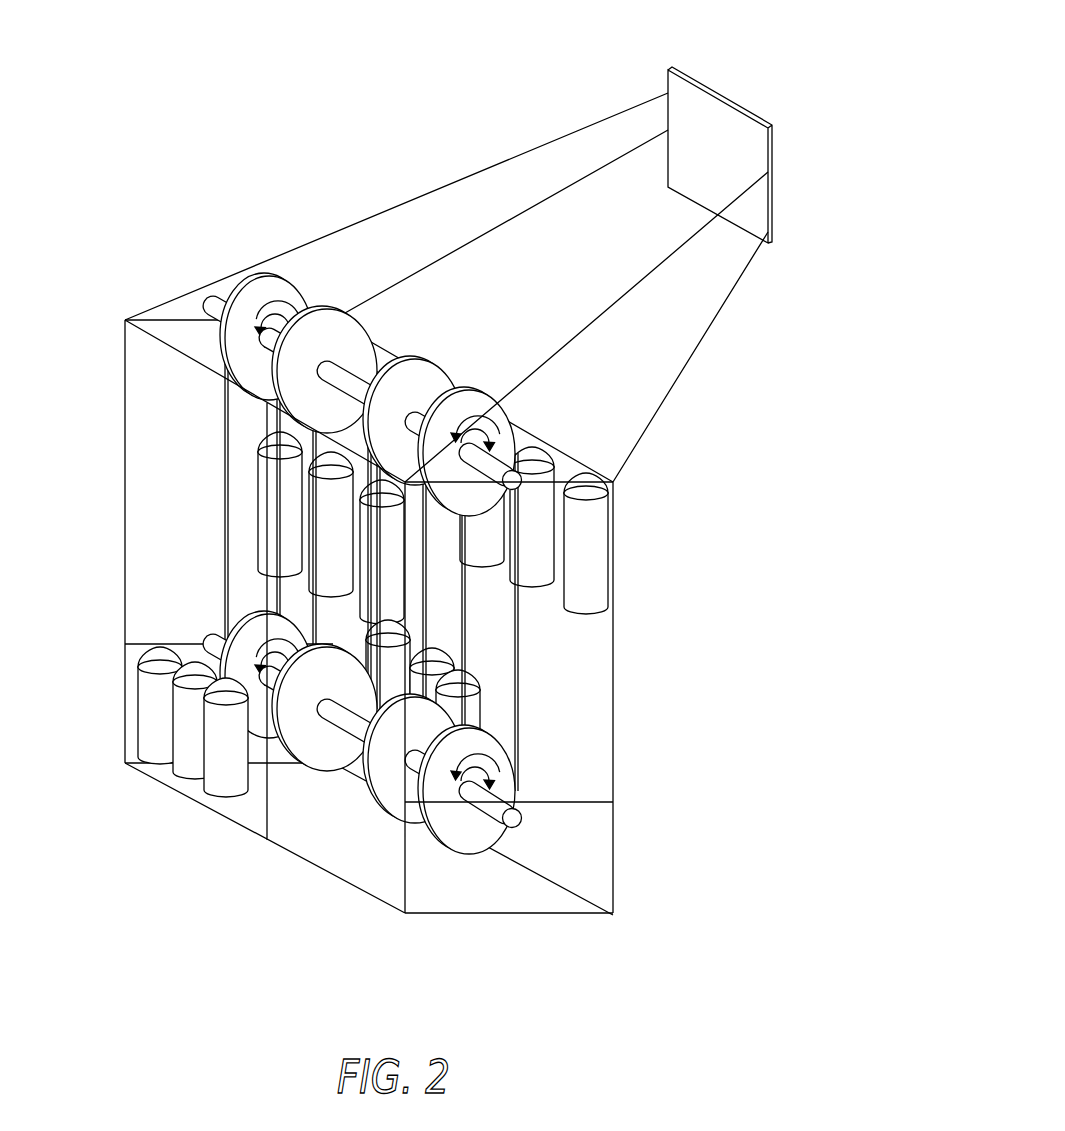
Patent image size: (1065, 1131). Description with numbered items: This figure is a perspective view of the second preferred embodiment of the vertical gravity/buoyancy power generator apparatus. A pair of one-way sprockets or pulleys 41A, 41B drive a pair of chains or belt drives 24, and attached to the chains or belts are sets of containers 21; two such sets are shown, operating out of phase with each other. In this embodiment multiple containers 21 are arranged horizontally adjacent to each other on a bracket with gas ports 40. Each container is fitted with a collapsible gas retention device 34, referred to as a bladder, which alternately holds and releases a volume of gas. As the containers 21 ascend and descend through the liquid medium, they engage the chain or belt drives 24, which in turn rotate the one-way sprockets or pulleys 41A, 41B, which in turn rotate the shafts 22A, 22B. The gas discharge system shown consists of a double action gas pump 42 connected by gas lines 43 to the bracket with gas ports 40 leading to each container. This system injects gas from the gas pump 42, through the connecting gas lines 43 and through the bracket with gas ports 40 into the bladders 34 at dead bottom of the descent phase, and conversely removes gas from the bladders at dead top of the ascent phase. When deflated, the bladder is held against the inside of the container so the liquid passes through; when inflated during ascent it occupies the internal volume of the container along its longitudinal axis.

The container 21 is at (153, 732).
The shaft 22A is at (327, 361).
The shaft 22B is at (396, 761).
The chain or belt drive 24 is at (216, 455).
The collapsible gas retention device (bladder) 34 is at (161, 658).
The bracket with gas ports 40 is at (125, 692).
The one-way sprocket or pulley 41A is at (277, 290).
The one-way sprocket or pulley 41B is at (503, 775).
The double action gas pump 42 is at (713, 128).
The gas lines 43 is at (726, 303).